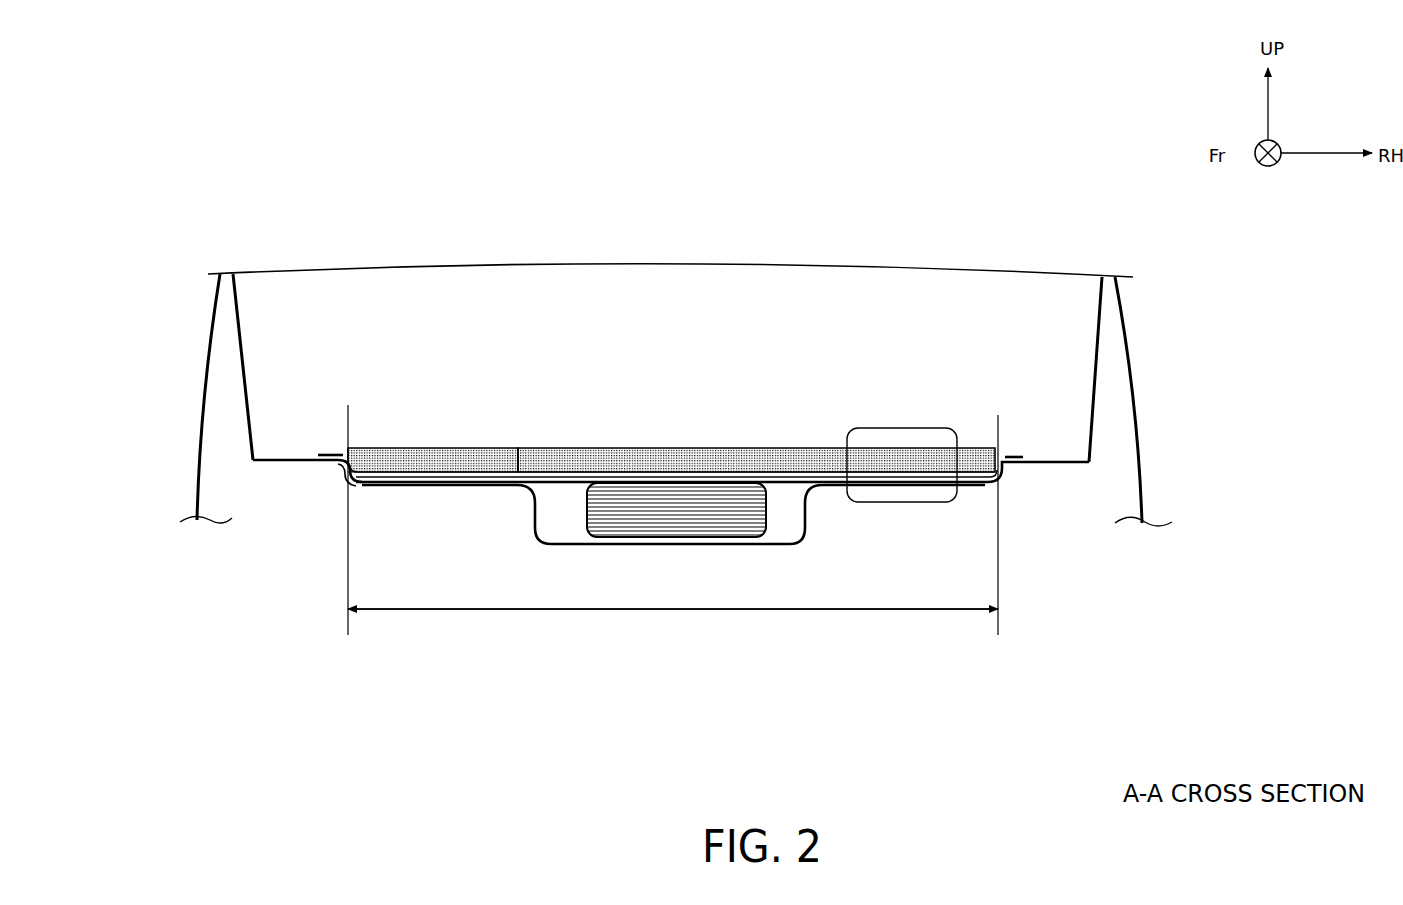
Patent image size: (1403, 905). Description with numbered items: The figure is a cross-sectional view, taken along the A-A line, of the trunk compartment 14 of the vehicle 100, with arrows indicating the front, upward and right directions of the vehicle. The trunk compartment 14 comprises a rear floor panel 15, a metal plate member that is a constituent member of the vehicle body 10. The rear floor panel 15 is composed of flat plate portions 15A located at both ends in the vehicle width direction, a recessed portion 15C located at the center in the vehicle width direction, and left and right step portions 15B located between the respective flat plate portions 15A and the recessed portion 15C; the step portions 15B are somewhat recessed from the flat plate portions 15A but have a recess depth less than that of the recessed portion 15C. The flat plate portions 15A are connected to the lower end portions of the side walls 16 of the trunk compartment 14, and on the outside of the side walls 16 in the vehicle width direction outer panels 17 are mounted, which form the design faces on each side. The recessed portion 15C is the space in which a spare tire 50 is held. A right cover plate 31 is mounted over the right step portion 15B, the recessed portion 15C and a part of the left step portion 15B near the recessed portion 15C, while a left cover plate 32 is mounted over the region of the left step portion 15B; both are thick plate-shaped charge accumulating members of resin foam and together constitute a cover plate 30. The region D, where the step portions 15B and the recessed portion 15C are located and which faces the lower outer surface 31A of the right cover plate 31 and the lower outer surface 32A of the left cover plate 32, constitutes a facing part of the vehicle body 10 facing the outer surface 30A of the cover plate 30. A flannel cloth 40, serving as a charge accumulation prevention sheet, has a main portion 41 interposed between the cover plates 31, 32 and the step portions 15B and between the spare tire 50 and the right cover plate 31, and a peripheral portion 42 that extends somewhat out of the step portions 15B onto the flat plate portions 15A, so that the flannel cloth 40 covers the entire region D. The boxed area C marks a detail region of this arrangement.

The vehicle 100 is at (173, 207).
The vehicle body 10 is at (667, 383).
The trunk compartment 14 is at (985, 352).
The side wall 16 is at (242, 390).
The outer panel 17 is at (200, 412).
The rear floor panel 15 is at (822, 585).
The flat plate portion 15A is at (1050, 463).
The step portion 15B is at (920, 493).
The recessed portion 15C is at (785, 540).
The cover plate 30 is at (671, 306).
The right cover plate 31 is at (637, 448).
The left cover plate 32 is at (480, 447).
The outer surface of the cover plate 30A is at (671, 618).
The lower outer surface of the right cover plate 31A is at (570, 482).
The lower outer surface of the left cover plate 32A is at (495, 487).
The flannel cloth 40 is at (615, 578).
The main portion of the flannel cloth 41 is at (443, 483).
The peripheral portion of the flannel cloth 42 is at (340, 455).
The spare tire 50 is at (683, 518).
The region C is at (900, 428).
The region D is at (673, 520).